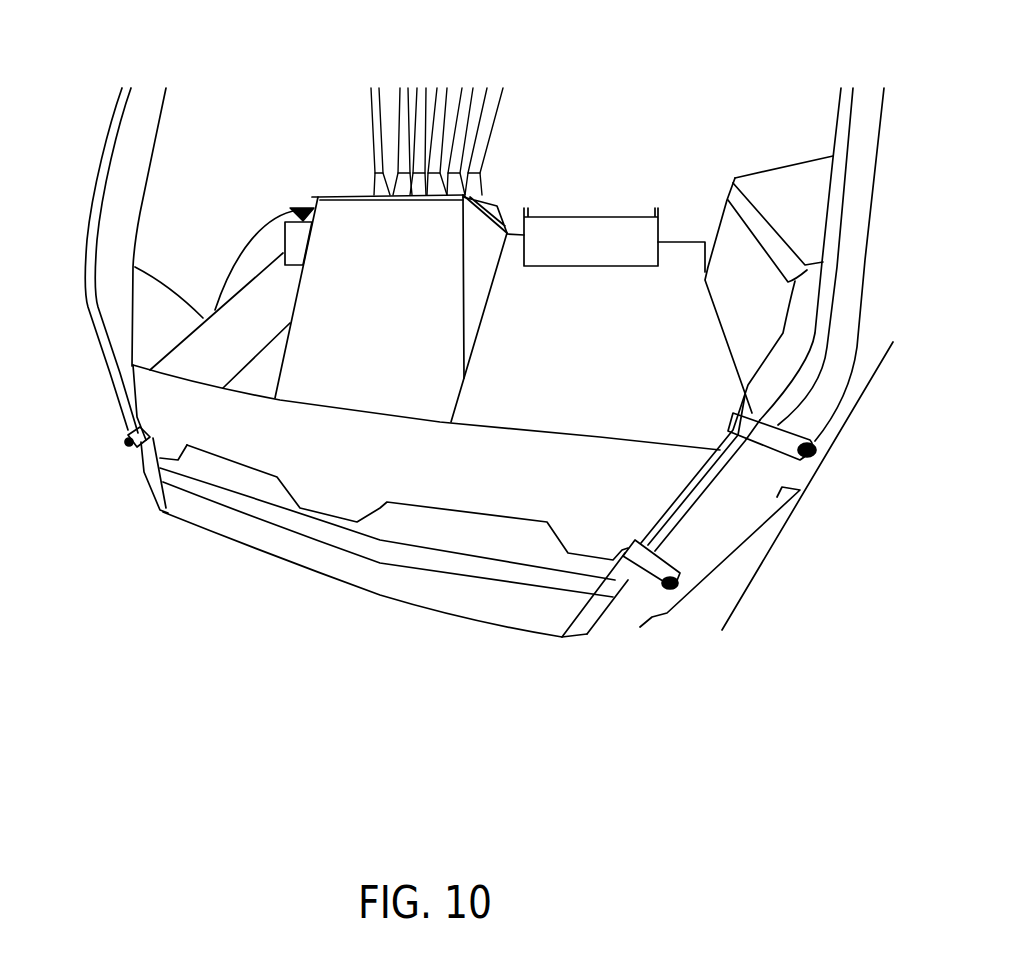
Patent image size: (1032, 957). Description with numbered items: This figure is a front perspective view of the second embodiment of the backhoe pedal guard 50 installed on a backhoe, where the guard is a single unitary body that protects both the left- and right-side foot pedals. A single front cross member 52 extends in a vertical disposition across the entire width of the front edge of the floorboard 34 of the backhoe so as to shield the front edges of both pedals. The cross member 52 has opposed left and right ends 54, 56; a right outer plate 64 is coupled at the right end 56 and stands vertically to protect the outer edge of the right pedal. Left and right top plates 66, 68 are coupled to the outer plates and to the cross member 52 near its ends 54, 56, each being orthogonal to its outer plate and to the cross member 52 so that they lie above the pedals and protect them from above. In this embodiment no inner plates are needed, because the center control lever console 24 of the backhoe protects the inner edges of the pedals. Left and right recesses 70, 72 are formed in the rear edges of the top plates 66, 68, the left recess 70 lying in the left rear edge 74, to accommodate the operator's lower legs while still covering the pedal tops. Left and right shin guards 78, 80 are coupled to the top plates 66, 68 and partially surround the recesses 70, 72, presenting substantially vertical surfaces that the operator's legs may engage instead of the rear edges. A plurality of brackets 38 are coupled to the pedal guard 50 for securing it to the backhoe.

The center control lever console 24 is at (418, 249).
The floorboard 34 is at (468, 537).
The brackets 38 is at (137, 450).
The backhoe pedal guard 50 is at (179, 588).
The front cross member 52 is at (345, 472).
The left end 54 is at (667, 490).
The right end 56 is at (158, 409).
The right outer plate 64 is at (268, 378).
The left top plate 66 is at (683, 310).
The right top plate 68 is at (192, 357).
The left recess 70 is at (594, 203).
The right recess 72 is at (301, 208).
The left rear edge 74 is at (678, 248).
The left shin guard 78 is at (564, 234).
The right shin guard 80 is at (285, 240).